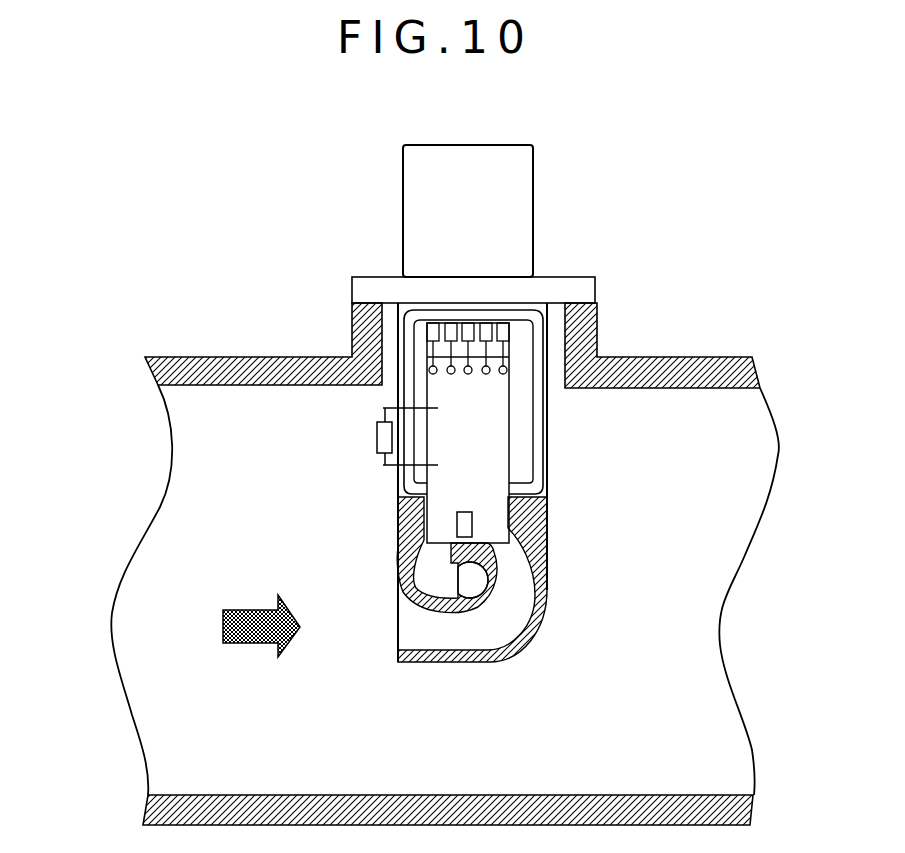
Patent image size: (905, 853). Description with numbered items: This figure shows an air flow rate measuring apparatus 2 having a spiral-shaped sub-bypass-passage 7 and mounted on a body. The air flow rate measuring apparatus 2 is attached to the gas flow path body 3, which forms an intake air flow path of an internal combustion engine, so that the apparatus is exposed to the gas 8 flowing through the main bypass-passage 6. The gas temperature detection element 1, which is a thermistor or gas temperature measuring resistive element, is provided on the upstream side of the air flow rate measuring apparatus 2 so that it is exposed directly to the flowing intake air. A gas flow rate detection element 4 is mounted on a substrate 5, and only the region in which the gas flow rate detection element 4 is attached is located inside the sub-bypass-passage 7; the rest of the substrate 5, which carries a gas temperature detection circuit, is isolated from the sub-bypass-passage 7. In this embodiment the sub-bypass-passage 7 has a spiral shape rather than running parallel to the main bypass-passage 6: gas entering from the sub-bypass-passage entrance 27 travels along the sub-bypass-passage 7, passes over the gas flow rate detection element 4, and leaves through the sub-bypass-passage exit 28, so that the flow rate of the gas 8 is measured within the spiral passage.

The gas temperature detection element 1 is at (378, 437).
The air flow rate measuring apparatus 2 is at (533, 200).
The gas flow path body 3 is at (218, 357).
The gas flow rate detection element 4 is at (472, 522).
The substrate 5 is at (485, 405).
The main bypass-passage 6 is at (187, 663).
The sub-bypass-passage 7 is at (515, 588).
The gas 8 is at (227, 610).
The sub-bypass-passage entrance 27 is at (407, 613).
The sub-bypass-passage exit 28 is at (467, 578).